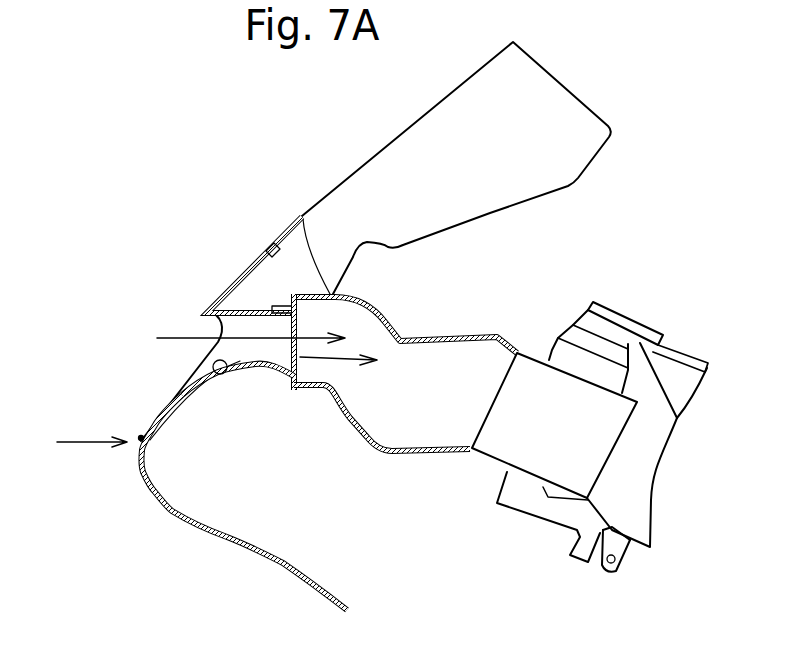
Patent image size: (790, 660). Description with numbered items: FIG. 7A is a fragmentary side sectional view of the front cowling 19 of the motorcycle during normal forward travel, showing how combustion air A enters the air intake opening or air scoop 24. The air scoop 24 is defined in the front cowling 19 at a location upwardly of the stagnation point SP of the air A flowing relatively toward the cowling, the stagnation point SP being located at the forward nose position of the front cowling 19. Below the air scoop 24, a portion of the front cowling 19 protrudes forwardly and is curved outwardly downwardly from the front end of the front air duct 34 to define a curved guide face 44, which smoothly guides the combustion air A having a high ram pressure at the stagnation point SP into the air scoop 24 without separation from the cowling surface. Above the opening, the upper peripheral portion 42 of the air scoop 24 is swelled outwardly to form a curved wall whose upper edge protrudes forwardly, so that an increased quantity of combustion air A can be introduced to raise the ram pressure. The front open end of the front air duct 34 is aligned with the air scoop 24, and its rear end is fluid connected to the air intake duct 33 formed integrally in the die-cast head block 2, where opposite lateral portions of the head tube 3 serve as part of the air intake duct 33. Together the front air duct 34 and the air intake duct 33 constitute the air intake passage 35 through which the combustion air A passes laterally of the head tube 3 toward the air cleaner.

The head block 2 is at (604, 372).
The head tube 3 is at (615, 327).
The air intake duct 33 is at (675, 380).
The front air duct 34 is at (433, 338).
The air intake passage 35 is at (417, 400).
The front cowling 19 is at (163, 507).
The air scoop 24 is at (235, 350).
The upper peripheral portion 42 is at (247, 262).
The curved guide face 44 is at (232, 378).
The combustion air A is at (175, 393).
The stagnation point SP is at (137, 445).